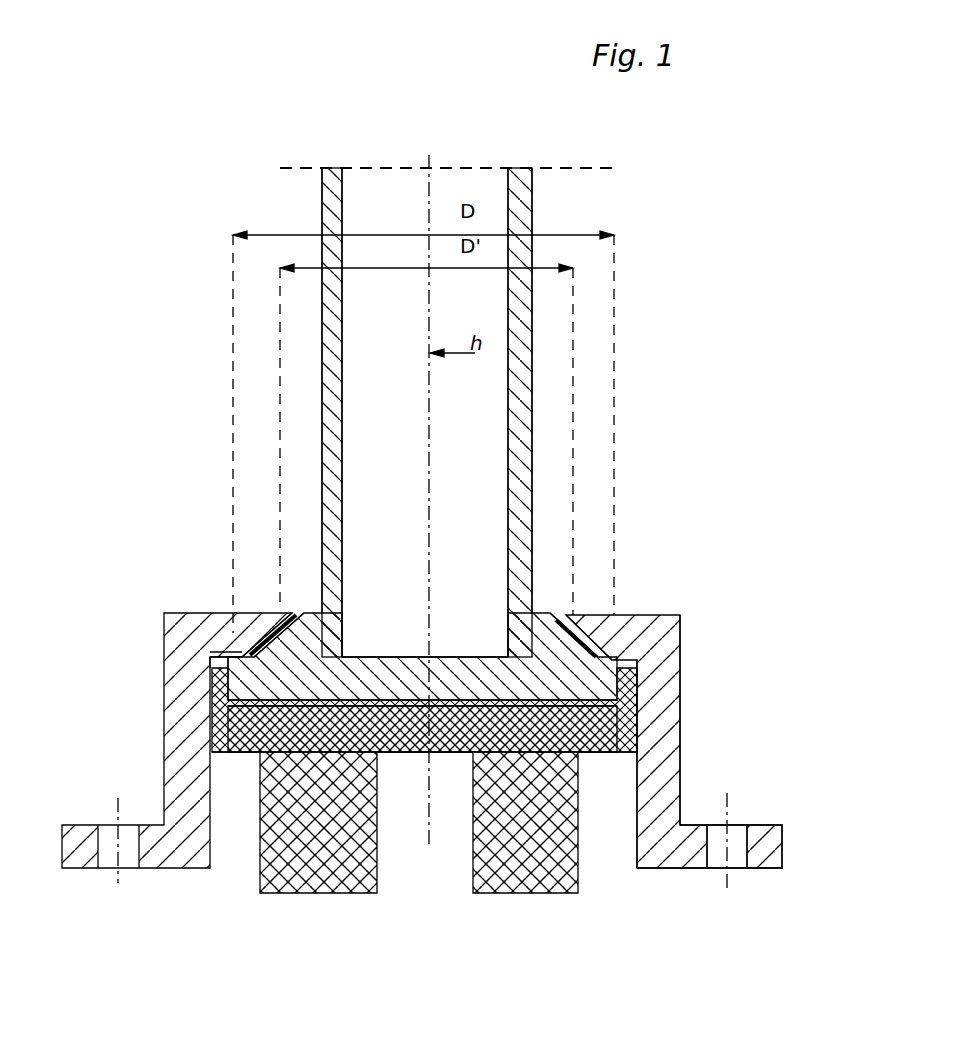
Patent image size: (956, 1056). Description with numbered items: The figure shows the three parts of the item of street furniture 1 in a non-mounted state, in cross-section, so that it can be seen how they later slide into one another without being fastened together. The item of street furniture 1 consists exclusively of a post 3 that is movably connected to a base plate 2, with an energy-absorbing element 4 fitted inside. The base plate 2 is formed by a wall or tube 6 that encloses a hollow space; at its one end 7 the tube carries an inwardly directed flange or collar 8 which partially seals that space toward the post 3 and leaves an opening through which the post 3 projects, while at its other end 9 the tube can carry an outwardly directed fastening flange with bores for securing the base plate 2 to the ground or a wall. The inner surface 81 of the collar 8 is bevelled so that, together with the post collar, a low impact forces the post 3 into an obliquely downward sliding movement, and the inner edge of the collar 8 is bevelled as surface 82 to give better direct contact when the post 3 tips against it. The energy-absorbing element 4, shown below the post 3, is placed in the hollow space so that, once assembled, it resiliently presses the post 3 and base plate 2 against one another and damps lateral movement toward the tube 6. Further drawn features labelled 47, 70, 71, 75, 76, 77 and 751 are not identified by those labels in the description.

The item of street furniture 1 is at (173, 97).
The base plate 2 is at (708, 740).
The post 3 is at (515, 192).
The energy-absorbing element 4 is at (542, 855).
The wall or tube 6 is at (657, 713).
The one end 7 is at (698, 617).
The inwardly directed flange or collar 8 is at (629, 640).
The other end 9 is at (660, 870).
The ring 47 is at (640, 688).
The flange 70 is at (765, 850).
The bolt hole 71 is at (737, 838).
The seal 75 is at (543, 660).
The chamfer 76 is at (580, 618).
The side wall 77 is at (618, 792).
The inner surface 81 is at (245, 660).
The bevelled surface 82 is at (283, 612).
The groove 751 is at (293, 652).